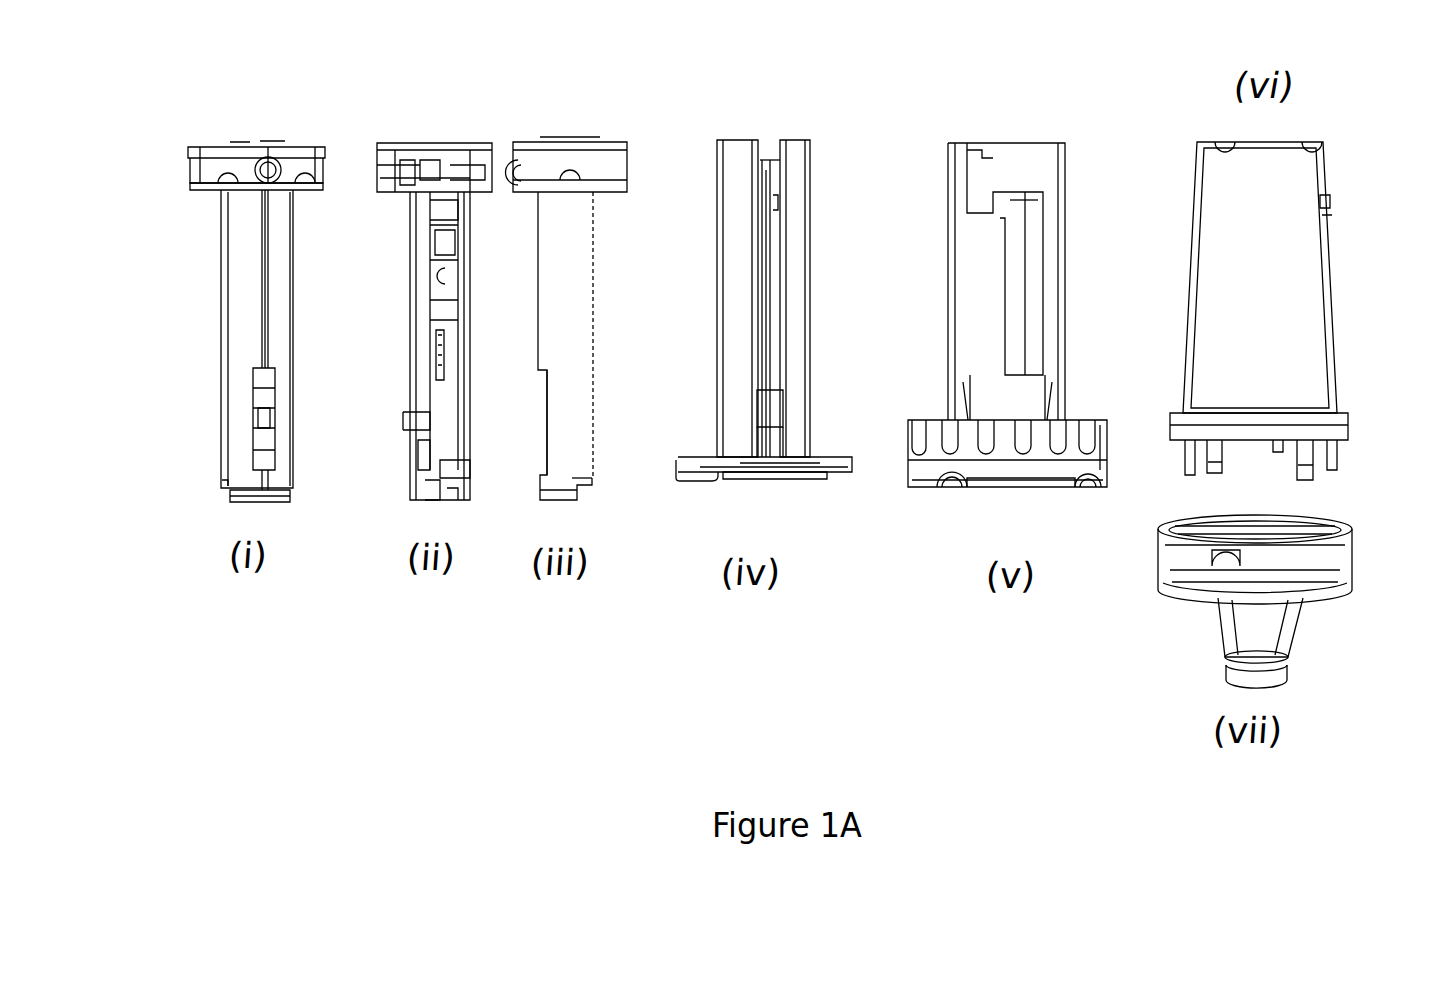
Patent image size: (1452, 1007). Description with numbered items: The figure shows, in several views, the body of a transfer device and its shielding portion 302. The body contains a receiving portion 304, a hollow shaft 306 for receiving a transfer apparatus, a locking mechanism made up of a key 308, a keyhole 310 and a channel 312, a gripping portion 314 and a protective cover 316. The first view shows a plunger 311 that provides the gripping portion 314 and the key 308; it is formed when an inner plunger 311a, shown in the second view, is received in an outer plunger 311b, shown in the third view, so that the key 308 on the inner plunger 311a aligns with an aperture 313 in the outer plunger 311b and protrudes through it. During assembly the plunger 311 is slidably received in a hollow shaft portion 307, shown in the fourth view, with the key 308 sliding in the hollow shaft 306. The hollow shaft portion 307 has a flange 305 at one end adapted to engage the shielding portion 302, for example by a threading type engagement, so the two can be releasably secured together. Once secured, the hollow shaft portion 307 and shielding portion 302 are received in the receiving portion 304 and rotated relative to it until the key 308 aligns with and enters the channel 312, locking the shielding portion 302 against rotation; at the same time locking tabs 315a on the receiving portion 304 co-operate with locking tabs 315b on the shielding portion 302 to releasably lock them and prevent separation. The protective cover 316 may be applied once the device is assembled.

The shielding portion 302 is at (1358, 582).
The receiving portion 304 is at (905, 475).
The flange 305 is at (687, 481).
The hollow shaft 306 is at (771, 160).
The hollow shaft portion 307 is at (735, 212).
The key 308 is at (278, 410).
The keyhole 310 is at (988, 178).
The plunger 311 is at (226, 292).
The inner plunger 311a is at (412, 280).
The outer plunger 311b is at (541, 285).
The channel 312 is at (1066, 283).
The aperture 313 is at (536, 425).
The gripping portion 314 is at (197, 143).
The locking tabs 315a is at (950, 478).
The locking tabs 315b is at (1225, 565).
The protective cover 316 is at (1350, 220).